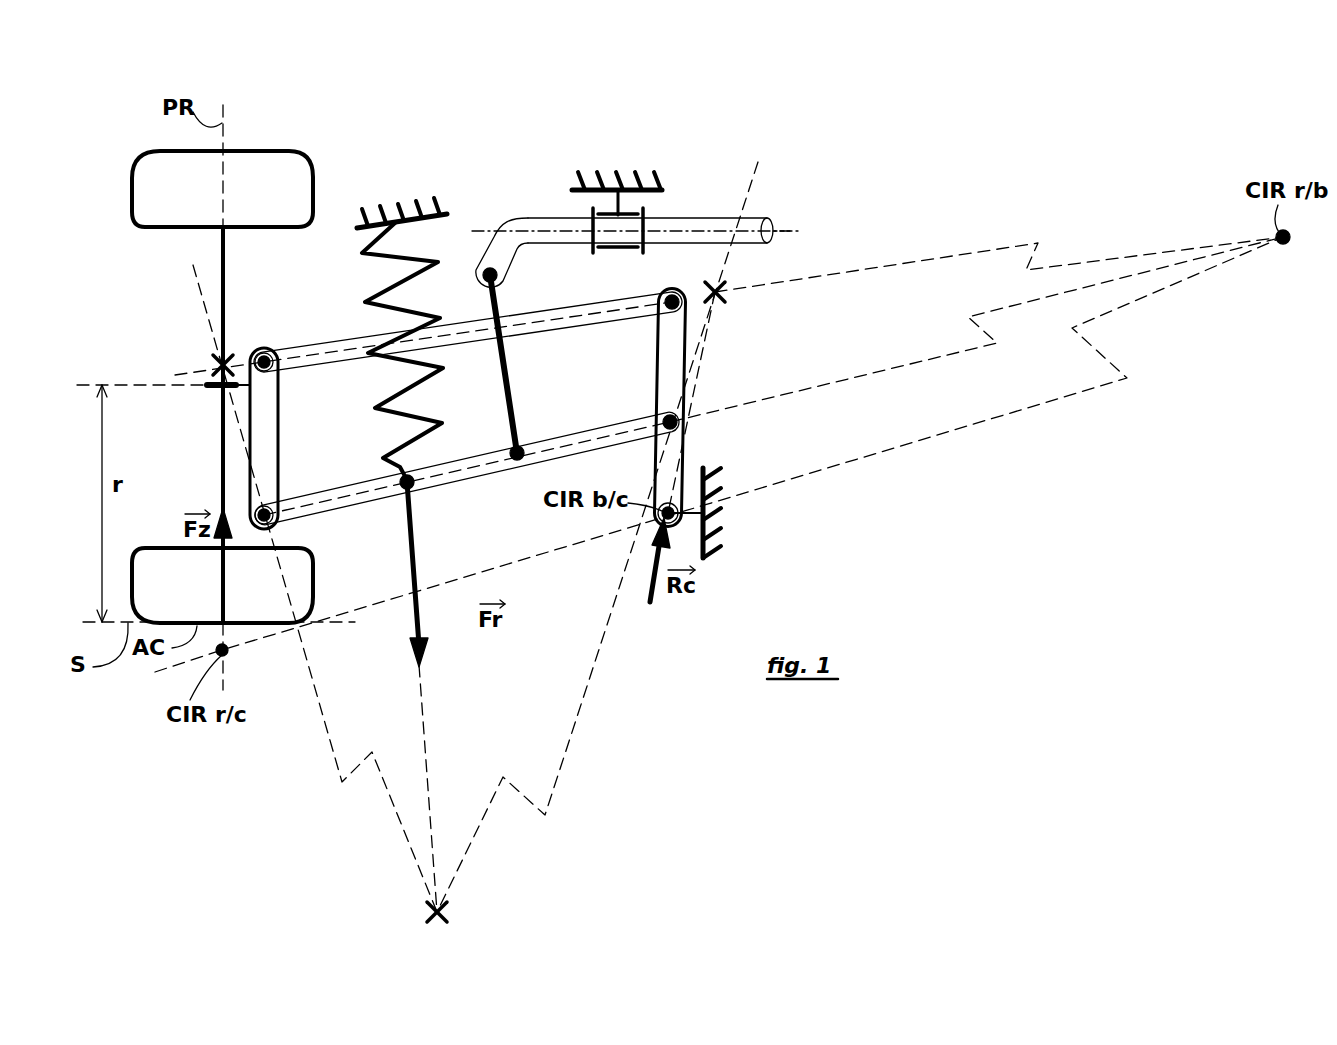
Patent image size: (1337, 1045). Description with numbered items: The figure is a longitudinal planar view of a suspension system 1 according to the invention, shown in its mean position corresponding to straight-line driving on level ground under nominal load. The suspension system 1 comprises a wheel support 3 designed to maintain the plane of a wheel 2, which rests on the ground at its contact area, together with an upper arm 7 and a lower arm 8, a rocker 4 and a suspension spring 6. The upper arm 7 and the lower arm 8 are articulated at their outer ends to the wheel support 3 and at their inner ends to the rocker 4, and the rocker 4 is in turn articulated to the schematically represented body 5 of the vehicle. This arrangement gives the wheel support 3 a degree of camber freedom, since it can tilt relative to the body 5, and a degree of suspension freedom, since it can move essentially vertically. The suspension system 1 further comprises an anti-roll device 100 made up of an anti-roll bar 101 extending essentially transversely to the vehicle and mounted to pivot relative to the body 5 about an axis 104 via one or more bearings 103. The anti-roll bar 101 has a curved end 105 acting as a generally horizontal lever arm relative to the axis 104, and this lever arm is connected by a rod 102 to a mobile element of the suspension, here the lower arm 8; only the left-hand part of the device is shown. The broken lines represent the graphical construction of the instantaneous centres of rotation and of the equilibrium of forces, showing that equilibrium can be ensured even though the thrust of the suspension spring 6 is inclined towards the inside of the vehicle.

The suspension system 1 is at (925, 510).
The wheel 2 is at (133, 200).
The wheel support 3 is at (265, 410).
The rocker 4 is at (671, 356).
The body 5 is at (424, 202).
The suspension spring 6 is at (377, 262).
The upper arm 7 is at (446, 347).
The lower arm 8 is at (608, 432).
The anti-roll device 100 is at (517, 152).
The anti-roll bar 101 is at (722, 218).
The rod 102 is at (506, 364).
The bearing 103 is at (630, 249).
The axis 104 is at (797, 229).
The curved end 105 is at (496, 253).